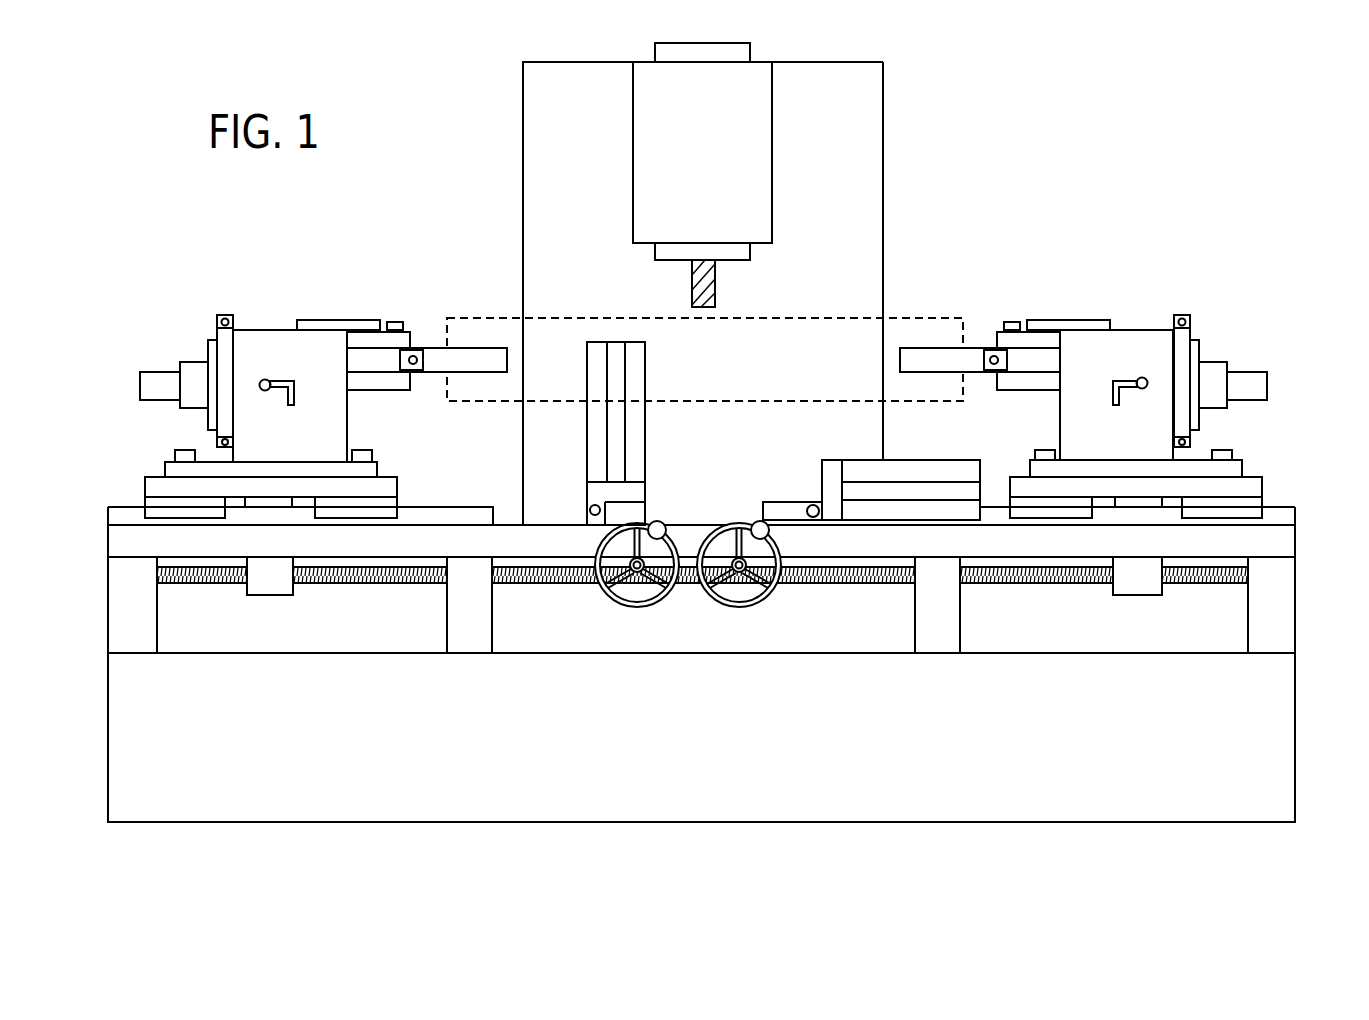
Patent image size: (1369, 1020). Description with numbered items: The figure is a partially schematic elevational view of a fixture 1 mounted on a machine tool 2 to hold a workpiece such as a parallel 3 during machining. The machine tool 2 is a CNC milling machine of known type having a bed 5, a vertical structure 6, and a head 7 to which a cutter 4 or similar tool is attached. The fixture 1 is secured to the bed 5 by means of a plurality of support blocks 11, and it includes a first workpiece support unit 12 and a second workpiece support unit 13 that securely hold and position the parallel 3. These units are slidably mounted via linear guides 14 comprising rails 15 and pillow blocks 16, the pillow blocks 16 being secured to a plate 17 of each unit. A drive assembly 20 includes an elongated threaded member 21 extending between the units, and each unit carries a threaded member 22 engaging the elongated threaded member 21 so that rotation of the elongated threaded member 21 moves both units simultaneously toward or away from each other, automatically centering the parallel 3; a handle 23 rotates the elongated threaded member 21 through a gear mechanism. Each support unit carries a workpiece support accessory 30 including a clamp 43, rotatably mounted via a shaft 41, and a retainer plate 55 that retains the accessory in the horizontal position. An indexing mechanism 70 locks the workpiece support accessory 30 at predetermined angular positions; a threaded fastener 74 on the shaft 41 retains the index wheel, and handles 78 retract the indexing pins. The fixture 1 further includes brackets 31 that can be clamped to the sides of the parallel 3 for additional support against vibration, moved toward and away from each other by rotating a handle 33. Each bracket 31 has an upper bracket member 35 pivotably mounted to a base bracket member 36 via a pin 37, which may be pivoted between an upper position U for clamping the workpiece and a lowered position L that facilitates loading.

The fixture 1 is at (1107, 298).
The machine tool 2 is at (886, 128).
The parallel 3 is at (932, 318).
The cutter 4 is at (692, 298).
The bed 5 is at (1297, 745).
The vertical structure 6 is at (884, 218).
The head 7 is at (633, 140).
The support blocks 11 is at (115, 628).
The first workpiece support unit 12 is at (270, 328).
The second workpiece support unit 13 is at (1140, 328).
The linear guides 14 is at (140, 503).
The rails 15 is at (115, 507).
The pillow blocks 16 is at (160, 512).
The plate 17 is at (152, 477).
The drive assembly 20 is at (330, 586).
The elongated threaded member 21 is at (192, 583).
The threaded member 22 is at (268, 597).
The handle 23 is at (610, 610).
The workpiece support accessory 30 is at (432, 338).
The brackets 31 is at (584, 375).
The handle 33 is at (757, 612).
The upper bracket member 35 is at (645, 388).
The base bracket member 36 is at (752, 512).
The pin 37 is at (588, 508).
The shaft 41 is at (160, 372).
The clamp 43 is at (487, 340).
The retainer plate 55 is at (325, 320).
The indexing mechanism 70 is at (206, 338).
The threaded fastener 74 is at (208, 372).
The handles 78 is at (262, 383).
The upper position U is at (645, 445).
The lowered position L is at (893, 460).